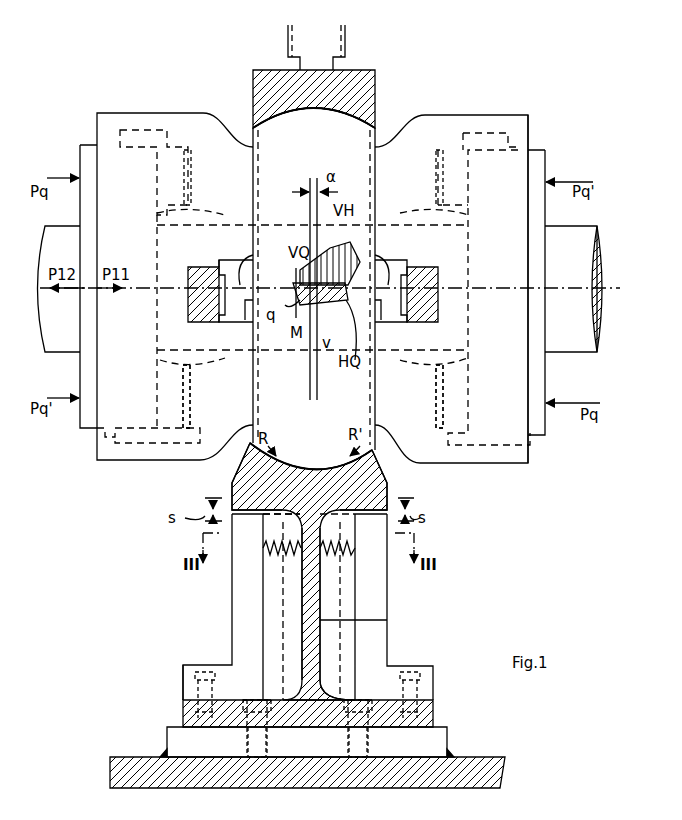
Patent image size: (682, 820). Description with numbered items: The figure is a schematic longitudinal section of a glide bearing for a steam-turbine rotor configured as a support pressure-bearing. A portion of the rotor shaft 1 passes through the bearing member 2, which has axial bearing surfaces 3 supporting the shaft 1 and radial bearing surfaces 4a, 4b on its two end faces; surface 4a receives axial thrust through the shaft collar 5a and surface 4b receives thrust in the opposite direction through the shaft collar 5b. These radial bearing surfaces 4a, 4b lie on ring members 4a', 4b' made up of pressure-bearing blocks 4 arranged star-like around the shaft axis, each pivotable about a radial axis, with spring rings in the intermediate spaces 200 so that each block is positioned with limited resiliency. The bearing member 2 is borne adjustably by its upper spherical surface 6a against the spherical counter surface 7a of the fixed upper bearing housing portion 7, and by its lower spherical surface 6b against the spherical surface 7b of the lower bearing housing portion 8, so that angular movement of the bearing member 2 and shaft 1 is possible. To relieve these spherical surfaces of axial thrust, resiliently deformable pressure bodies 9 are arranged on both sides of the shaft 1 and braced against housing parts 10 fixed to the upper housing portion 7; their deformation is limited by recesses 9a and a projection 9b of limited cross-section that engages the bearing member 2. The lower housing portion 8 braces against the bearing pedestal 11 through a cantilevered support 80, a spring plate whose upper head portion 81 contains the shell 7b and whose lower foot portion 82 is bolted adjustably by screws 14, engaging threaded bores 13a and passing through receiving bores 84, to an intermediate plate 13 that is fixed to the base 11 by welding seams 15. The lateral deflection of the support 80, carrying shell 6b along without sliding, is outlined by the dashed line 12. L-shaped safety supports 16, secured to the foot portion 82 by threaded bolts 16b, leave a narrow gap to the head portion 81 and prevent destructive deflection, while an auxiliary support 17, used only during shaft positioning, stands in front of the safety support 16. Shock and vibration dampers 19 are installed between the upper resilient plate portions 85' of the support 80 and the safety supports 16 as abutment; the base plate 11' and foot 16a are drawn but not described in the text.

The shaft 1 is at (570, 350).
The bearing member 2 is at (515, 108).
The axial bearing surfaces 3 is at (278, 222).
The pressure-bearing blocks 4 is at (195, 391).
The radial bearing surface 4a is at (175, 275).
The ring member 4a' is at (197, 177).
The radial bearing surface 4b is at (452, 277).
The ring member 4b' is at (431, 177).
The shaft collar 5a is at (108, 170).
The shaft collar 5b is at (520, 172).
The upper spherical surface 6a is at (373, 124).
The lower spherical surface 6b is at (302, 470).
The upper bearing housing portion 7 is at (340, 43).
The upper spherical counter surface 7a is at (377, 94).
The lower spherical surface 7b is at (232, 478).
The lower bearing housing portion 8 is at (232, 490).
The pressure bodies 9 is at (222, 332).
The recesses 9a is at (215, 262).
The projection of limited cross-section 9b is at (240, 262).
The housing parts 10 is at (195, 280).
The bearing pedestal 11 is at (320, 767).
The base plate 11' is at (326, 703).
The dashed line 12 is at (259, 153).
The intermediate plate 13 is at (440, 734).
The threaded bores 13a is at (246, 747).
The screws 14 is at (247, 700).
The welding seams 15 is at (163, 755).
The safety supports 16 is at (242, 614).
The bracket foot 16a is at (190, 680).
The threaded bolts 16b is at (200, 668).
The auxiliary support 17 is at (370, 606).
The shock and vibration dampers 19 is at (280, 560).
The cantilevered support 80 is at (380, 623).
The upper head portion 81 is at (387, 478).
The lower foot portion 82 is at (327, 696).
The receiving bores 84 is at (277, 698).
The upper resilient plate portions 85' is at (247, 554).
The intermediate spaces 200 is at (216, 410).